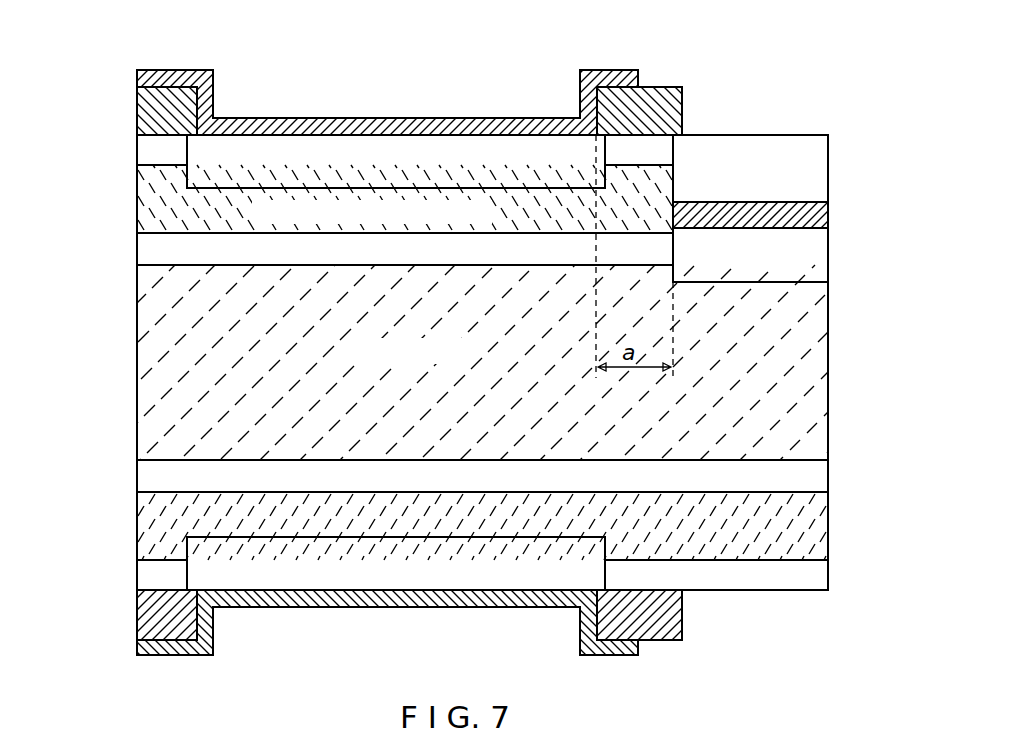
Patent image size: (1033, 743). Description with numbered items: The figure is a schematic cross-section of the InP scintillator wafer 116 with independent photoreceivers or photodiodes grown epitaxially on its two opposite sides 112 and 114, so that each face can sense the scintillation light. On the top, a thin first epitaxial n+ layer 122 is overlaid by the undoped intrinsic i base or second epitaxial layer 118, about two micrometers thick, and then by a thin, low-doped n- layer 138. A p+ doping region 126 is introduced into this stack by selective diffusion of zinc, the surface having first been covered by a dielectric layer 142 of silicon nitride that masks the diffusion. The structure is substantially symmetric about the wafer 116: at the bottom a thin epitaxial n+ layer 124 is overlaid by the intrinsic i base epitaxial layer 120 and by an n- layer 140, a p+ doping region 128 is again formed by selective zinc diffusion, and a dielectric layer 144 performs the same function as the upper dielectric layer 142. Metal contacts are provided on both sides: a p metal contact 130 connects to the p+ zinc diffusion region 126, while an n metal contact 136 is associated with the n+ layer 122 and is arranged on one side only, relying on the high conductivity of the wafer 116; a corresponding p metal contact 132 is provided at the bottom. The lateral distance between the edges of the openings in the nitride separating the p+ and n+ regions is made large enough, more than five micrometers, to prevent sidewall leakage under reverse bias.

The side of the wafer 112 is at (175, 270).
The side of the wafer 114 is at (165, 462).
The wafer 116 is at (148, 350).
The second epitaxial layer 118 is at (152, 210).
The intrinsic i base epitaxial layer 120 is at (152, 538).
The n+ layer 122 is at (150, 255).
The n+ layer 124 is at (150, 482).
The p+ doping region 126 is at (508, 148).
The p+ doping region 128 is at (520, 575).
The p metal contact 130 is at (173, 70).
The p metal contact 2 132 is at (183, 657).
The n metal contact 136 is at (795, 160).
The n- layer 138 is at (147, 145).
The n- layer 140 is at (152, 582).
The dielectric layer 142 is at (148, 97).
The dielectric layer 144 is at (152, 625).